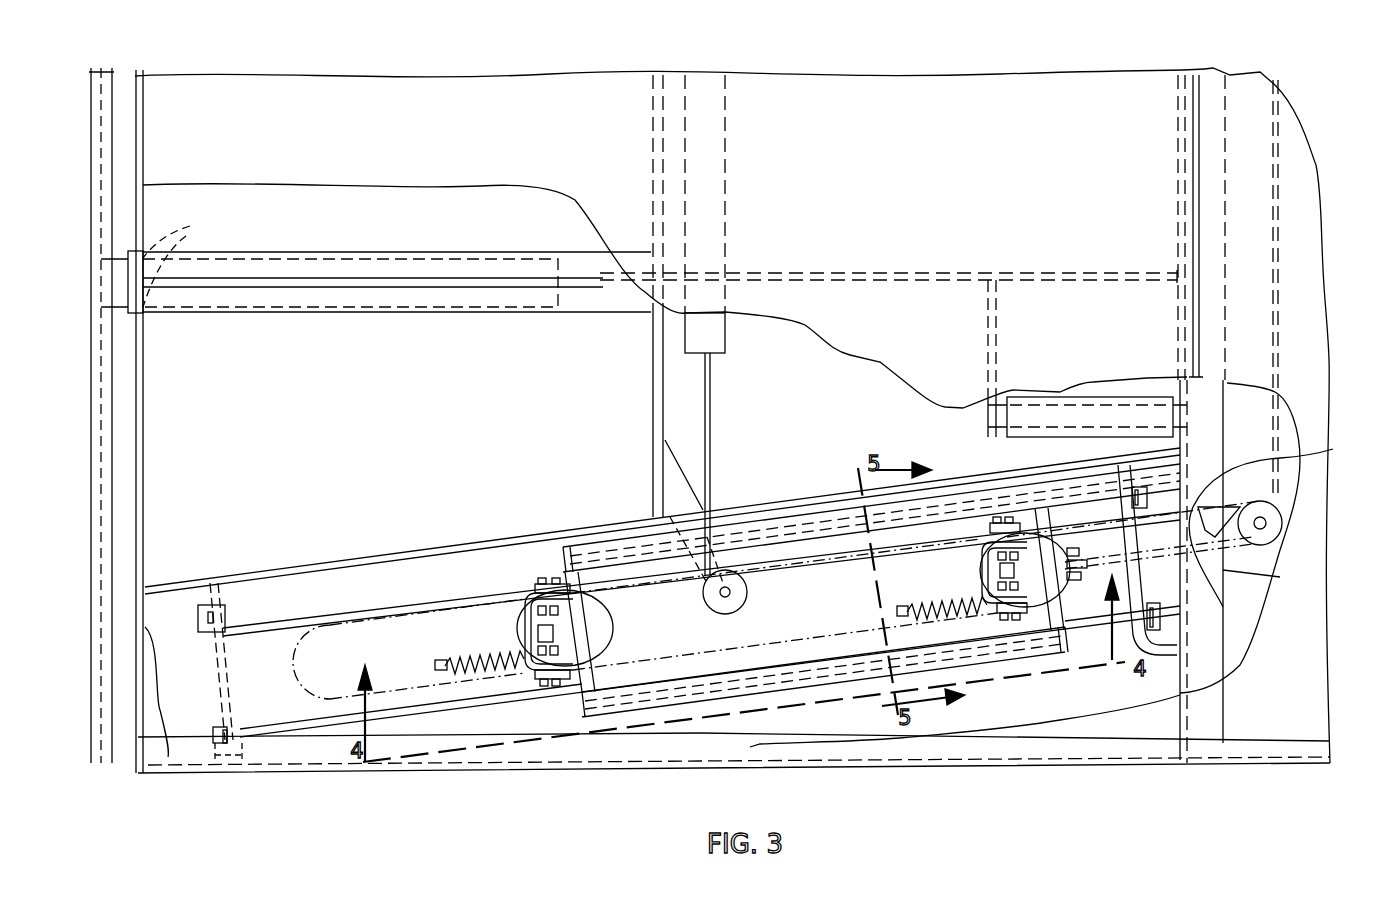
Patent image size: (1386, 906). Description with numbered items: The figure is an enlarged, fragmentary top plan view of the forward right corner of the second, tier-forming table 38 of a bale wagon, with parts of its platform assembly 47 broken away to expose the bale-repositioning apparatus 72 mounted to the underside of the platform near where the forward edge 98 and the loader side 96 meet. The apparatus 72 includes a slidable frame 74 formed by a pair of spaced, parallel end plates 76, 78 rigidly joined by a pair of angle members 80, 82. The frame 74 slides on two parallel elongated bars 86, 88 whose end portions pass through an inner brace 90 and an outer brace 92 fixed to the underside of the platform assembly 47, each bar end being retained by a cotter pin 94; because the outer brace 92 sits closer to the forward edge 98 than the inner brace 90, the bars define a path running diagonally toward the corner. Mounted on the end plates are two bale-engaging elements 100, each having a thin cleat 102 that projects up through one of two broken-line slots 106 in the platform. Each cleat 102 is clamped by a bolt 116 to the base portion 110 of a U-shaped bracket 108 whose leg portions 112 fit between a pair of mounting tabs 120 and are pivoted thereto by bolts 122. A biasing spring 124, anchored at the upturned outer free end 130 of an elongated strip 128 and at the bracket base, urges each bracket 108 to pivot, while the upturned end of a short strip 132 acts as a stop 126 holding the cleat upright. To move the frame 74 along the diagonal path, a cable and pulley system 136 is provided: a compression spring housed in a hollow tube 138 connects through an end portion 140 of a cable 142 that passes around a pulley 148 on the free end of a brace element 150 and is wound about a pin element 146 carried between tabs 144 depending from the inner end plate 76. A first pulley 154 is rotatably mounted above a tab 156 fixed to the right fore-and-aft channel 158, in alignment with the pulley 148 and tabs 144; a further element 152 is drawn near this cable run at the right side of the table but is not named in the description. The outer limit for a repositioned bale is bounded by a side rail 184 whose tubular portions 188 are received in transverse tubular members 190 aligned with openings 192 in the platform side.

The second, tier-forming table 38 is at (1316, 165).
The platform assembly 47 is at (864, 162).
The apparatus 72 is at (823, 442).
The frame 74 is at (857, 682).
The end plate 76 is at (1110, 608).
The end plate 78 is at (600, 680).
The angle member 80 is at (1040, 655).
The angle member 82 is at (808, 512).
The elongated bar 86 is at (1085, 604).
The elongated bar 88 is at (1100, 488).
The inner end brace 90 is at (1135, 540).
The outer end brace 92 is at (218, 665).
The cotter pin 94 is at (200, 617).
The loader side 96 is at (147, 513).
The forward edge 98 is at (630, 768).
The bale-engaging element 100 is at (478, 632).
The cleat 102 is at (538, 600).
The slot 106 is at (304, 648).
The U-shaped bracket 108 is at (527, 668).
The base portion 110 is at (535, 635).
The leg portion 112 is at (575, 603).
The bolt 116 is at (530, 625).
The mounting tab 120 is at (545, 590).
The bolt 122 is at (555, 590).
The biasing spring 124 is at (475, 660).
The stop 126 is at (533, 605).
The elongated strip 128 is at (580, 645).
The upturned outer free end 130 is at (445, 672).
The short strip 132 is at (565, 625).
The cable and pulley system 136 is at (1300, 517).
The hollow tube 138 is at (727, 345).
The cable end portion 140 is at (711, 400).
The cable 142 is at (1290, 216).
The tab 144 is at (1082, 565).
The pin element 146 is at (1075, 548).
The pulley 148 is at (753, 587).
The brace element 150 is at (700, 493).
The guide 152 is at (1280, 238).
The first pulley 154 is at (1265, 515).
The tab 156 is at (1276, 538).
The right fore-and-aft extending channel 158 is at (1280, 577).
The side rail 184 is at (126, 457).
The tubular portion 188 is at (125, 310).
The tubular member 190 is at (360, 313).
The opening 192 is at (188, 260).